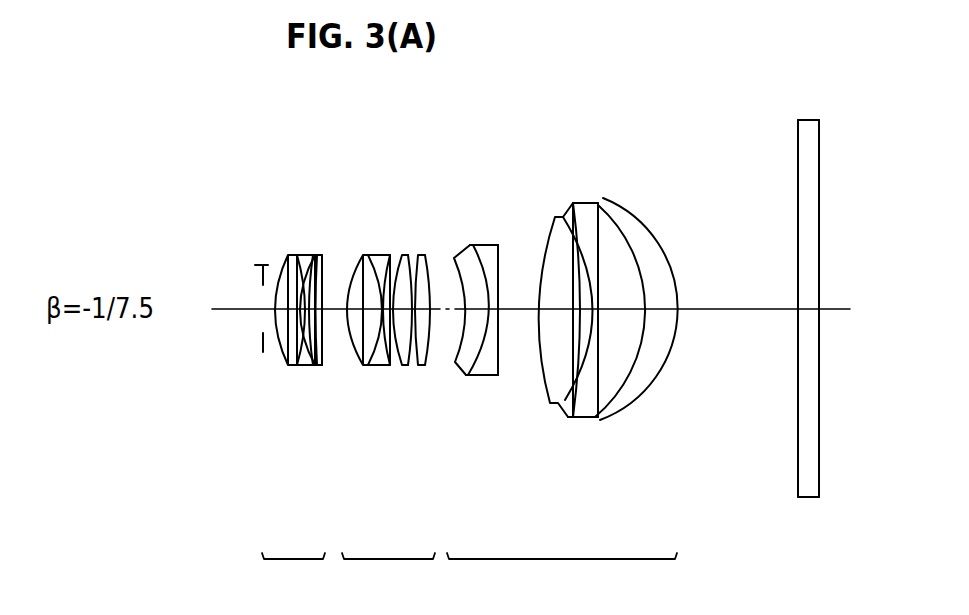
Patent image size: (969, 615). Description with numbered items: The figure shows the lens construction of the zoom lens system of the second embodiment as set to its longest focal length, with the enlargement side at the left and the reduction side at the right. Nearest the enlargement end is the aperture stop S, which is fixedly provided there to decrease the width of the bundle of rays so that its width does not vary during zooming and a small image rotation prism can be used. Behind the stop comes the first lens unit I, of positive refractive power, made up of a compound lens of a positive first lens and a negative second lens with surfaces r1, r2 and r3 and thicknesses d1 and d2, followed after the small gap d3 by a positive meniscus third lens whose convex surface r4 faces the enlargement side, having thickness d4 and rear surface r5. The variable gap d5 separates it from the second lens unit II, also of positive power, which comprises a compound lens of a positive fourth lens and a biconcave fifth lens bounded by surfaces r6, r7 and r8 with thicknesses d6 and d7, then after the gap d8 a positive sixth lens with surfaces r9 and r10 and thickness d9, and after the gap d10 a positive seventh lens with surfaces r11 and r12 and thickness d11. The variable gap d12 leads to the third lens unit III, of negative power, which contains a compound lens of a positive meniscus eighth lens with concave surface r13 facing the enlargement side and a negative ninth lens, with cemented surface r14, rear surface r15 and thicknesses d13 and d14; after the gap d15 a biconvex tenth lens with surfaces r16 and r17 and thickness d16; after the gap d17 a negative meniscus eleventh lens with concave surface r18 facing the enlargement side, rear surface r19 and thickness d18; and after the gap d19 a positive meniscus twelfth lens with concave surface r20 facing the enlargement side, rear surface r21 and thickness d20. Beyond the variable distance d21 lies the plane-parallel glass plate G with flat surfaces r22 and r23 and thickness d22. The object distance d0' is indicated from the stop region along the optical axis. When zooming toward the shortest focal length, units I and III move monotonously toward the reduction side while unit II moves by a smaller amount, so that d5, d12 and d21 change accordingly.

The aperture stop S is at (257, 266).
The glass plate G is at (806, 127).
The first lens unit I is at (293, 577).
The second lens unit II is at (388, 577).
The third lens unit III is at (562, 577).
The radius of curvature r1 is at (288, 260).
The radius of curvature r2 is at (297, 258).
The radius of curvature r3 is at (309, 256).
The radius of curvature r4 is at (313, 256).
The radius of curvature r5 is at (317, 256).
The radius of curvature r6 is at (322, 256).
The radius of curvature r7 is at (359, 257).
The radius of curvature r8 is at (368, 256).
The radius of curvature r9 is at (402, 256).
The radius of curvature r10 is at (408, 256).
The radius of curvature r11 is at (418, 256).
The radius of curvature r12 is at (427, 256).
The radius of curvature r13 is at (455, 258).
The radius of curvature r14 is at (474, 246).
The radius of curvature r15 is at (502, 250).
The radius of curvature r16 is at (555, 216).
The radius of curvature r17 is at (566, 213).
The radius of curvature r18 is at (576, 203).
The radius of curvature r19 is at (598, 203).
The radius of curvature r20 is at (604, 198).
The radius of curvature r21 is at (645, 223).
The radius of curvature r22 is at (798, 163).
The radius of curvature r23 is at (819, 165).
The axial distance d0' (stop to first lens) d0' is at (207, 374).
The axial distance d1 is at (284, 364).
The axial distance d2 is at (297, 365).
The axial distance d3 is at (305, 365).
The axial distance d4 is at (312, 365).
The axial distance d5 is at (317, 365).
The axial distance d6 is at (323, 365).
The axial distance d7 is at (358, 365).
The axial distance d8 is at (370, 365).
The axial distance d9 is at (400, 365).
The axial distance d10 is at (408, 365).
The axial distance d11 is at (418, 365).
The axial distance d12 is at (428, 365).
The axial distance d13 is at (458, 364).
The axial distance d14 is at (482, 372).
The axial distance d15 is at (517, 376).
The axial distance d16 is at (551, 405).
The axial distance d17 is at (580, 418).
The axial distance d18 is at (600, 418).
The axial distance d19 is at (632, 398).
The axial distance d20 is at (674, 420).
The axial distance d21 is at (735, 309).
The axial distance d22 is at (808, 309).